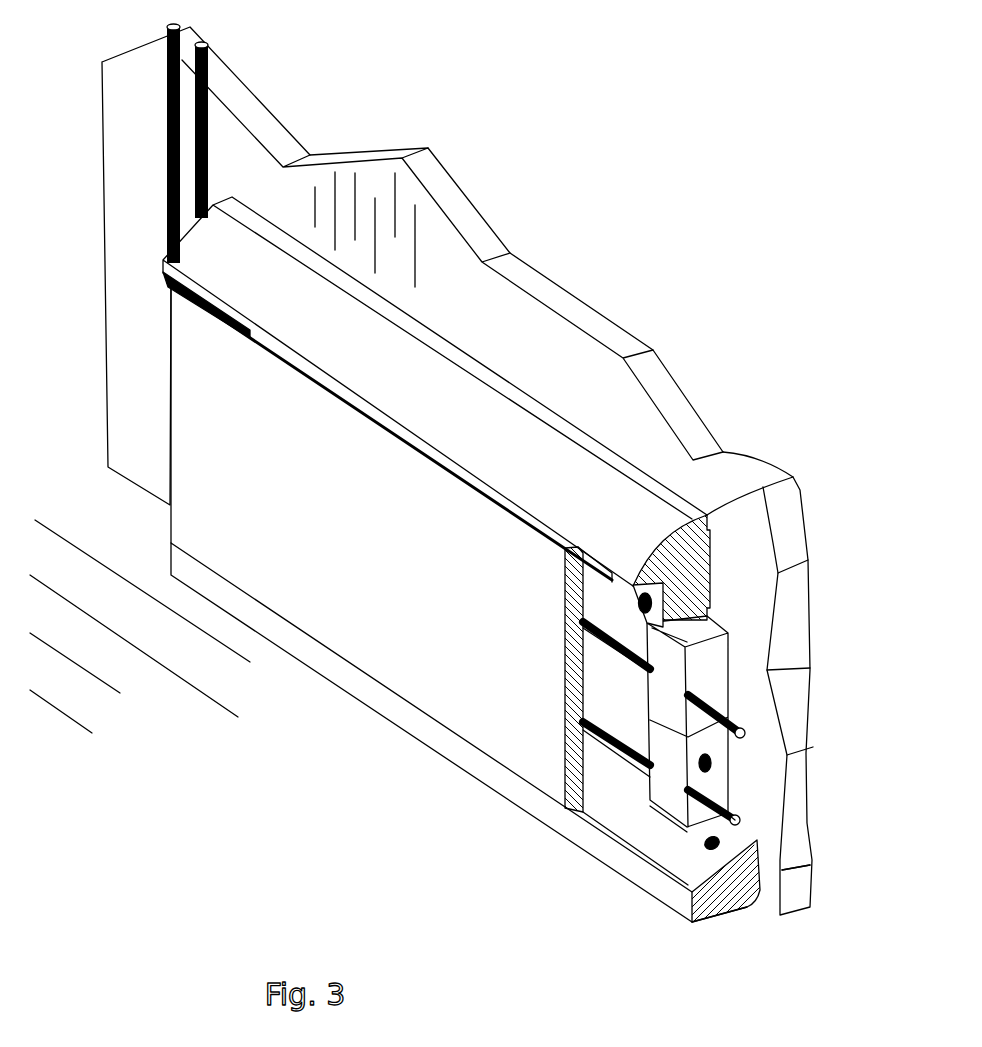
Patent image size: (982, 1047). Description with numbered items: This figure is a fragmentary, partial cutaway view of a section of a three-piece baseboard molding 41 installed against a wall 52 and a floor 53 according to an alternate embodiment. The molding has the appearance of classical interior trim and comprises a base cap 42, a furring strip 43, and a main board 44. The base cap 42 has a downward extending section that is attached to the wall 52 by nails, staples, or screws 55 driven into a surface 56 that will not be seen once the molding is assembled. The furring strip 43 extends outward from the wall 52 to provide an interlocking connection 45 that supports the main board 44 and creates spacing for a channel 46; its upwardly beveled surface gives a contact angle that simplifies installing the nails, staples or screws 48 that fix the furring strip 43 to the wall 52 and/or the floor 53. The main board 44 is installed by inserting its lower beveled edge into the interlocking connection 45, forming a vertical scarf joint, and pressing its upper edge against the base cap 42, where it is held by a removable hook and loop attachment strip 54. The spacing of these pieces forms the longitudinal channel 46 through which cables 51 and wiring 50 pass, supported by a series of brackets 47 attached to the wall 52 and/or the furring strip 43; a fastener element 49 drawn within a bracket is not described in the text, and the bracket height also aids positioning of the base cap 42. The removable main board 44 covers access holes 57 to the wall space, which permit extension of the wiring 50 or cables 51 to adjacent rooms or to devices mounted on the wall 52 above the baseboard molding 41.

The baseboard molding 41 is at (78, 889).
The base cap 42 is at (796, 477).
The furring strip 43 is at (692, 922).
The main board 44 is at (396, 565).
The interlocking connection 45 is at (733, 900).
The channel 46 is at (590, 699).
The brackets 47 is at (737, 826).
The nails, staples or screws 48 is at (703, 845).
The fastener 49 is at (712, 770).
The wiring 50 is at (745, 733).
The cables 51 is at (796, 859).
The wall 52 is at (598, 409).
The floor 53 is at (370, 839).
The hook and loop attachment strip 54 is at (592, 567).
The nails, staples, or screws 55 is at (727, 657).
The surface 56 is at (628, 593).
The access holes 57 is at (600, 483).